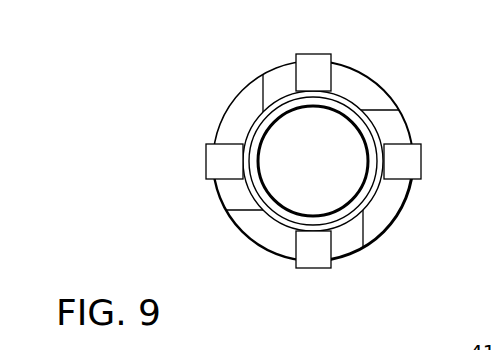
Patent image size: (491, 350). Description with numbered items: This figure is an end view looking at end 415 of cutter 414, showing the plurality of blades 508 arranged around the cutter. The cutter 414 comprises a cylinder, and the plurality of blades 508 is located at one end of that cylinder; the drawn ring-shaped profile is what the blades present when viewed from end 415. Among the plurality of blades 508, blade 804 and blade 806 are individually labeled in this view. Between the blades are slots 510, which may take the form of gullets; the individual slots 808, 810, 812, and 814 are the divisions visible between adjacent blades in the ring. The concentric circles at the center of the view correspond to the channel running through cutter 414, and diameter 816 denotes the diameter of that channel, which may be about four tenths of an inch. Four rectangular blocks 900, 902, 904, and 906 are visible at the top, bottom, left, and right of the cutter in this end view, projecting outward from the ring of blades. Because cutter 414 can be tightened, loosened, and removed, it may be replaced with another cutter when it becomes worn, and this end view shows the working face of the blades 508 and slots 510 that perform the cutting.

The plurality of blades 508 is at (116, 78).
The slots 510 is at (134, 124).
The cutter 414 is at (239, 236).
The end 415 is at (397, 197).
The blade 804 is at (281, 260).
The blade 806 is at (226, 105).
The slot 808 is at (272, 65).
The slot 810 is at (374, 83).
The slot 812 is at (400, 217).
The slot 814 is at (218, 198).
The diameter 816 is at (412, 120).
The block 900 is at (205, 162).
The block 902 is at (308, 53).
The block 904 is at (423, 156).
The block 906 is at (320, 268).